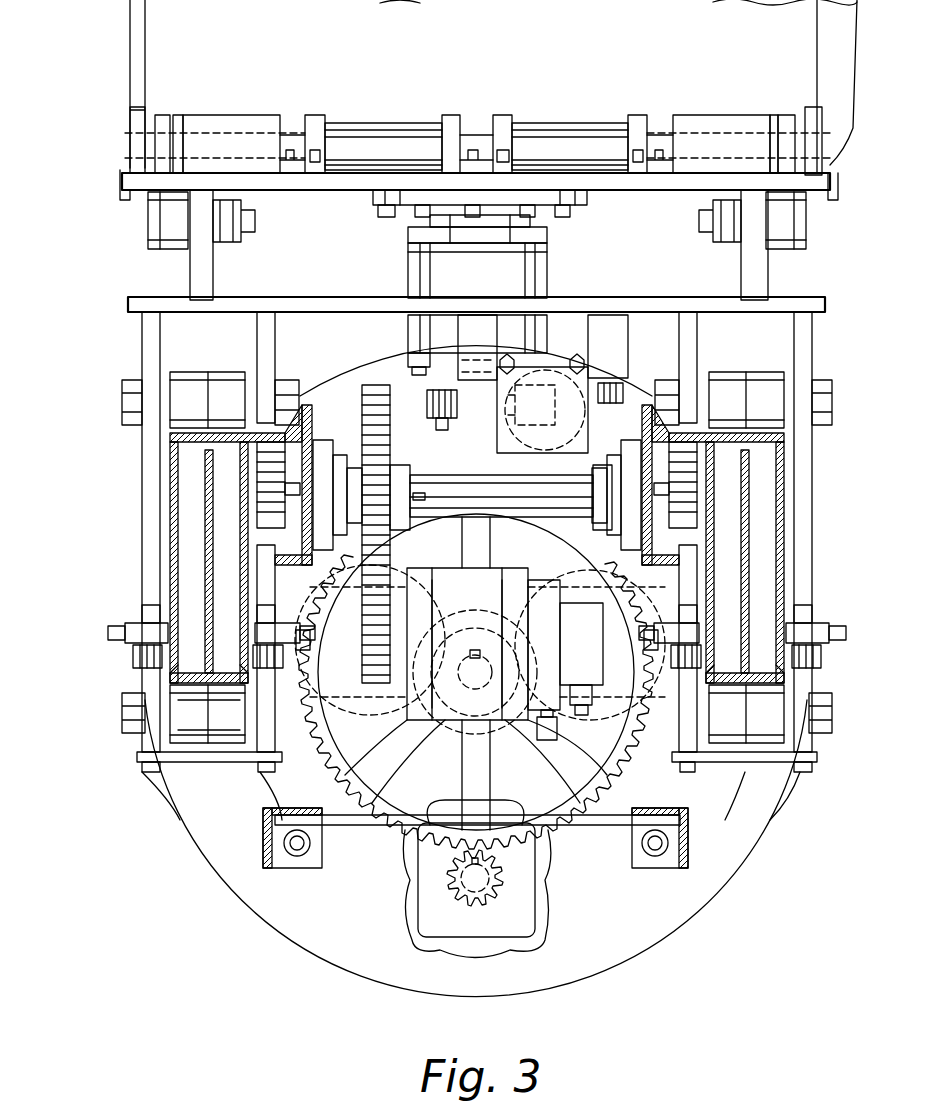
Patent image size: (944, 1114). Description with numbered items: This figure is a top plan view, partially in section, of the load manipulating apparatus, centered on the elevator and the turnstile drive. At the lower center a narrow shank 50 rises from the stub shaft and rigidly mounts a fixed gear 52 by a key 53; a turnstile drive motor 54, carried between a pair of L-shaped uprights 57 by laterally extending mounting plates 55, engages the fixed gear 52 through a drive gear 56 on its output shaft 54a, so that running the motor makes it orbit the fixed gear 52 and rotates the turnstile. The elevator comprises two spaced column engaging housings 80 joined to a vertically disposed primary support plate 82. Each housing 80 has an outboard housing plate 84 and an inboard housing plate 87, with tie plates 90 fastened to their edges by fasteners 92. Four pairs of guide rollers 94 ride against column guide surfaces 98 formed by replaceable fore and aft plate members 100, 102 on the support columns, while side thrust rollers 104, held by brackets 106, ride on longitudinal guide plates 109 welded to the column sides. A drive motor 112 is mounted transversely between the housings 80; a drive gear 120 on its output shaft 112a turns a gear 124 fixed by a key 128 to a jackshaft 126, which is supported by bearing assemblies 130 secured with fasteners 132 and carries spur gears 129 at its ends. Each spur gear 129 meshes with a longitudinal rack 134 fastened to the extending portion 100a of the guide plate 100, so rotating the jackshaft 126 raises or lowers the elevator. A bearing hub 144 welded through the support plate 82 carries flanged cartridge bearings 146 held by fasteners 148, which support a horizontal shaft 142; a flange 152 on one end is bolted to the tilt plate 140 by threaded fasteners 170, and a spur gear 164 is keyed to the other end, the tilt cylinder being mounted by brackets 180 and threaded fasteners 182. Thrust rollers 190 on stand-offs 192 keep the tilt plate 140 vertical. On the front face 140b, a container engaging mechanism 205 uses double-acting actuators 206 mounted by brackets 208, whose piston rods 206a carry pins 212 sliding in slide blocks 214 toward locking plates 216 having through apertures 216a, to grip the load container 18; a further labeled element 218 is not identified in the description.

The load container 18 is at (562, 46).
The shank 50 is at (475, 672).
The fixed gear 52 is at (615, 770).
The key 53 is at (486, 655).
The turnstile drive motor 54 is at (545, 892).
The drive motor output shaft 54a is at (465, 888).
The mounting plates 55 is at (348, 826).
The drive gear 56 is at (490, 900).
The L-shaped uprights 57 is at (310, 870).
The column engaging housings 80 is at (322, 390).
The primary support plate 82 is at (342, 297).
The outboard housing plate 84 is at (142, 335).
The inboard housing plate 87 is at (275, 760).
The tie plates 90 is at (195, 764).
The fasteners 92 is at (150, 774).
The guide rollers 94 is at (222, 372).
The column guide surfaces 98 is at (168, 436).
The fore plate member 100 is at (172, 460).
The extending portion 100a is at (306, 402).
The aft plate member 102 is at (205, 716).
The side thrust rollers 104 is at (138, 655).
The brackets 106 is at (135, 630).
The longitudinal guide plates 109 is at (212, 650).
The drive motor 112 is at (503, 568).
The drive motor output shaft 112a is at (420, 640).
The drive gear 120 is at (374, 680).
The gear 124 is at (392, 428).
The jackshaft 126 is at (438, 475).
The key 128 is at (428, 496).
The spur gears 129 is at (260, 485).
The bearing assemblies 130 is at (340, 455).
The fasteners 132 is at (352, 468).
The longitudinal rack 134 is at (322, 440).
The tilt plate 140 is at (607, 185).
The front face 140b is at (600, 195).
The shaft 142 is at (500, 212).
The bearing hub 144 is at (548, 272).
The flanged cartridge bearings 146 is at (548, 233).
The fasteners 148 is at (420, 378).
The flange 152 is at (412, 198).
The spur gear 164 is at (455, 415).
The threaded fasteners 170 is at (578, 210).
The brackets 180 is at (600, 345).
The threaded fasteners 182 is at (625, 386).
The thrust rollers 190 is at (160, 222).
The stand-offs 192 is at (213, 272).
The container engaging mechanism 205 is at (460, 100).
The double-acting actuators 206 is at (355, 125).
The piston rod 206a is at (315, 125).
The brackets 208 is at (505, 150).
The pin 212 is at (178, 128).
The slide block 214 is at (230, 114).
The locking plate 216 is at (143, 112).
The through aperture 216a is at (163, 128).
The bracket 218 is at (498, 114).